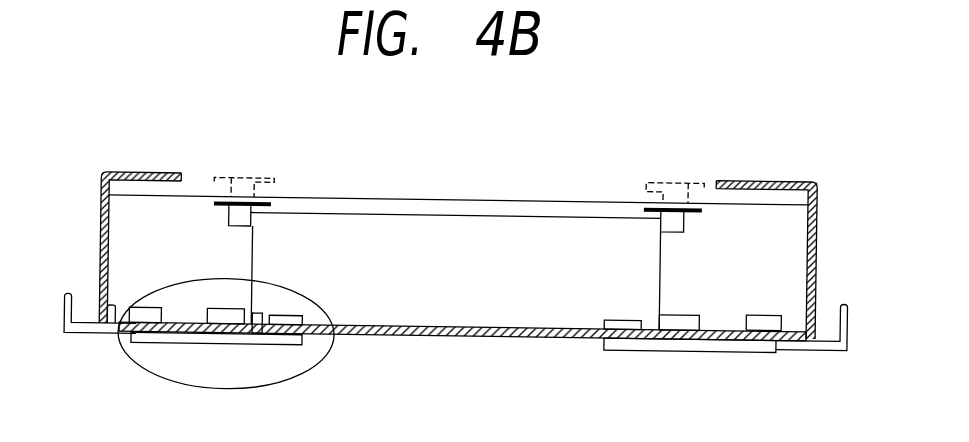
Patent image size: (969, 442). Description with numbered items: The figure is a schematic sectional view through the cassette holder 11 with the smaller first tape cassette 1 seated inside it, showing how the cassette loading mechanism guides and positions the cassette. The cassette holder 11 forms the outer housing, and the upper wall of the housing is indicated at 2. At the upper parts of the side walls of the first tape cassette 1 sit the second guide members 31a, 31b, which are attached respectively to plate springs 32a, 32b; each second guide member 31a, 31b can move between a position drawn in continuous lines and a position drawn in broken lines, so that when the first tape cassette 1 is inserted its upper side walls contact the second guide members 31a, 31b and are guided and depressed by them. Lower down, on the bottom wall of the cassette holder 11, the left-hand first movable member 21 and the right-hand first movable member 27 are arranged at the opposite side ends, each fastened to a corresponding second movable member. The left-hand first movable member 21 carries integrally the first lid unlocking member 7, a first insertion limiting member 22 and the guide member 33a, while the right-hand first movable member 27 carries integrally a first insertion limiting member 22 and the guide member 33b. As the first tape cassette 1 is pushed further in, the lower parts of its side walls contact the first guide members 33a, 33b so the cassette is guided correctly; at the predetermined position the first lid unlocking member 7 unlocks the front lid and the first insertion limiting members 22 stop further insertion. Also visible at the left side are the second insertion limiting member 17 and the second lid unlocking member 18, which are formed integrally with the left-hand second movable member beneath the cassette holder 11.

The first tape cassette 1 is at (502, 216).
The housing cover 2 is at (410, 197).
The first lid unlocking member 7 is at (260, 314).
The cassette holder 11 is at (473, 341).
The second insertion limiting member 17 is at (150, 308).
The second lid unlocking member 18 is at (105, 276).
The left-hand first movable member 21 is at (266, 344).
The first insertion limiting member 22 is at (290, 314).
The right-hand first movable member 27 is at (688, 351).
The second guide member 31a is at (274, 200).
The second guide member 31b is at (641, 206).
The plate spring 32a is at (214, 196).
The plate spring 32b is at (705, 202).
The guide member 33a is at (222, 308).
The guide member 33b is at (680, 312).